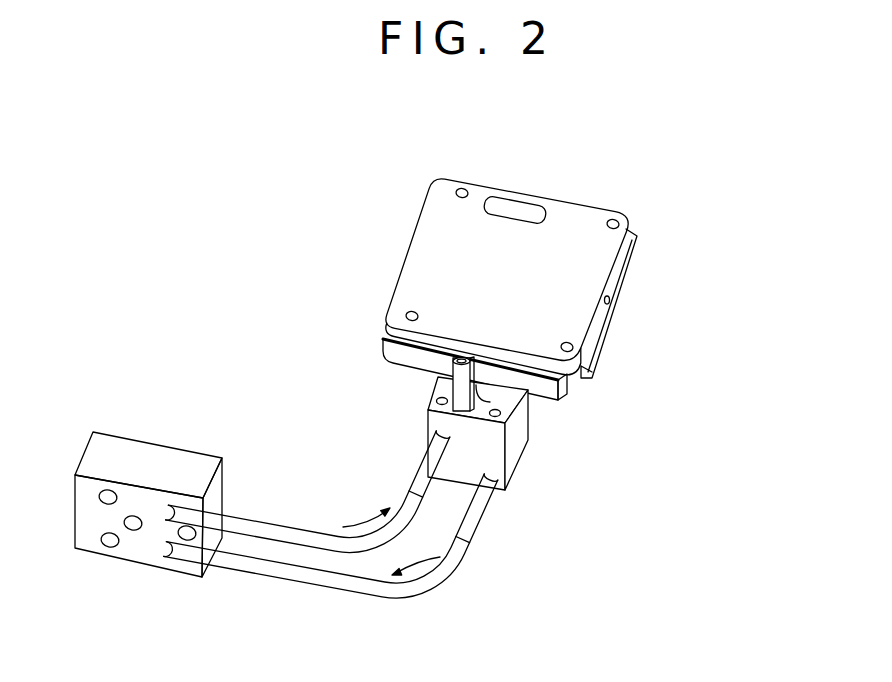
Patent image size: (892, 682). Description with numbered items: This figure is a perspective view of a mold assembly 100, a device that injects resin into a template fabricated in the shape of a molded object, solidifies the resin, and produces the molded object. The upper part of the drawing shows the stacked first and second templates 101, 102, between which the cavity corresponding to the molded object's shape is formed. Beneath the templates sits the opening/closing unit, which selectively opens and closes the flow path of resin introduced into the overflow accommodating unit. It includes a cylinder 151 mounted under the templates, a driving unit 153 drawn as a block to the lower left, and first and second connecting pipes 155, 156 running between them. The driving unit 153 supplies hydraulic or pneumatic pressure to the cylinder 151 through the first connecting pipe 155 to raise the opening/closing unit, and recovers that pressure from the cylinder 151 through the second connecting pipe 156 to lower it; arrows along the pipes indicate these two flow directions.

The mold assembly 100 is at (688, 183).
The first template 101 is at (415, 254).
The second template 102 is at (388, 343).
The cylinder 151 is at (435, 424).
The driving unit 153 is at (148, 452).
The first connecting pipe 155 is at (283, 526).
The second connecting pipe 156 is at (292, 578).